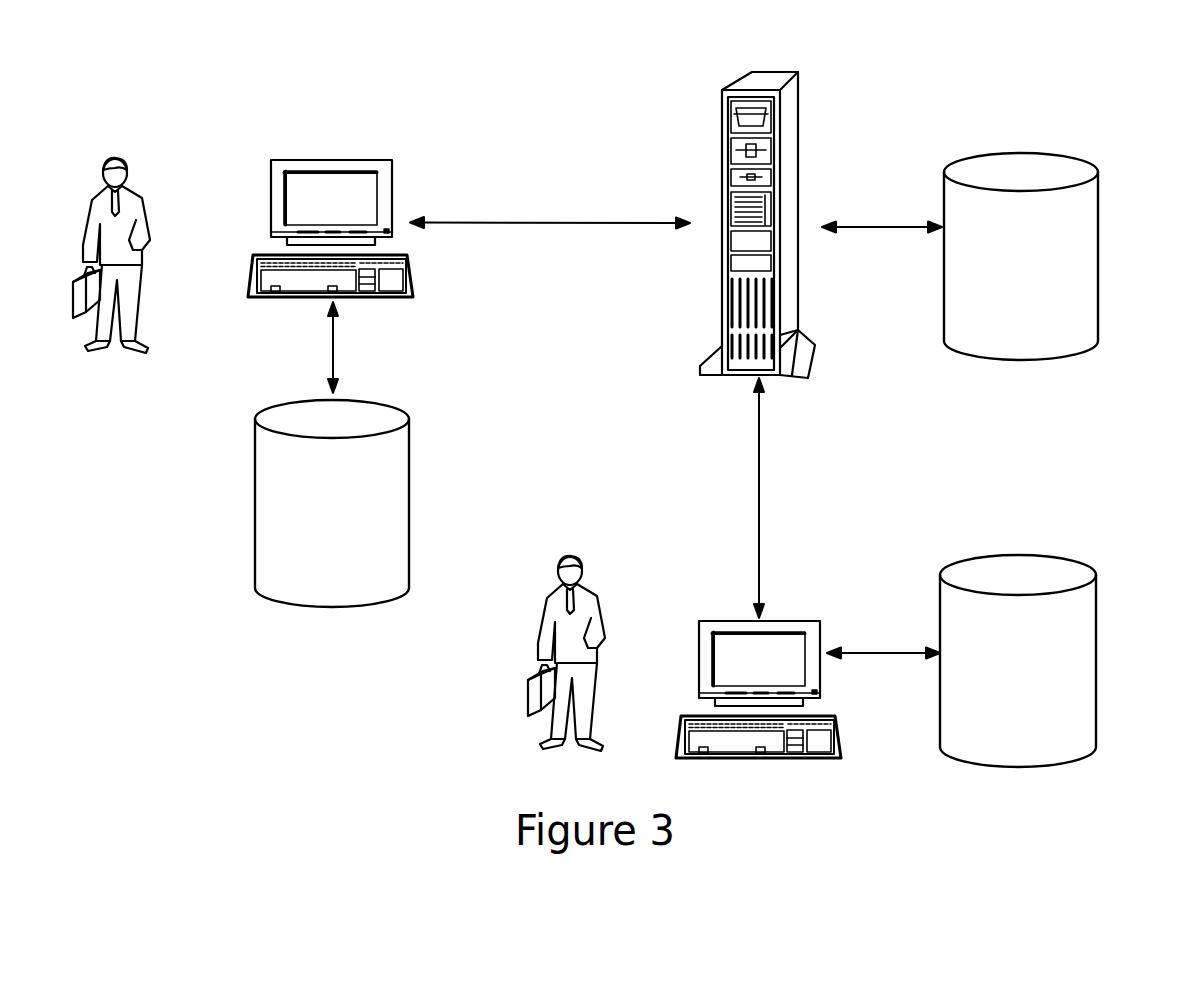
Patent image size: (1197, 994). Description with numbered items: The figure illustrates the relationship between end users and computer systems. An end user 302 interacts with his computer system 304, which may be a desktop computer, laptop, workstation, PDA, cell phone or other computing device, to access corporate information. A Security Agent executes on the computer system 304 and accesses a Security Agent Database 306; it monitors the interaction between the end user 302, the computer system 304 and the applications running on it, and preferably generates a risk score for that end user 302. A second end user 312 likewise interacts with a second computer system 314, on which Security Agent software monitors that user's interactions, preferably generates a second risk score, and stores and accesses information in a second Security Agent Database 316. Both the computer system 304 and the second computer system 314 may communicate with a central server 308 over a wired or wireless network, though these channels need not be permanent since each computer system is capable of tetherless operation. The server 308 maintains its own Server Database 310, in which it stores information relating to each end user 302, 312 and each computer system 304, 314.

The end user 302 is at (138, 200).
The computer system 304 is at (345, 160).
The Security Agent Database 306 is at (407, 407).
The server 308 is at (787, 72).
The Server Database 310 is at (1097, 162).
The second end user 312 is at (595, 597).
The second computer system 314 is at (793, 620).
The second Security Agent Database 316 is at (1093, 563).